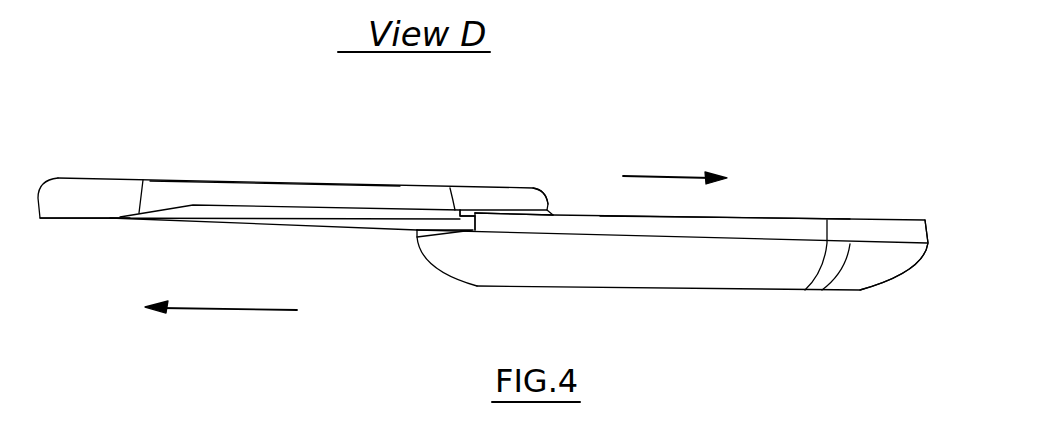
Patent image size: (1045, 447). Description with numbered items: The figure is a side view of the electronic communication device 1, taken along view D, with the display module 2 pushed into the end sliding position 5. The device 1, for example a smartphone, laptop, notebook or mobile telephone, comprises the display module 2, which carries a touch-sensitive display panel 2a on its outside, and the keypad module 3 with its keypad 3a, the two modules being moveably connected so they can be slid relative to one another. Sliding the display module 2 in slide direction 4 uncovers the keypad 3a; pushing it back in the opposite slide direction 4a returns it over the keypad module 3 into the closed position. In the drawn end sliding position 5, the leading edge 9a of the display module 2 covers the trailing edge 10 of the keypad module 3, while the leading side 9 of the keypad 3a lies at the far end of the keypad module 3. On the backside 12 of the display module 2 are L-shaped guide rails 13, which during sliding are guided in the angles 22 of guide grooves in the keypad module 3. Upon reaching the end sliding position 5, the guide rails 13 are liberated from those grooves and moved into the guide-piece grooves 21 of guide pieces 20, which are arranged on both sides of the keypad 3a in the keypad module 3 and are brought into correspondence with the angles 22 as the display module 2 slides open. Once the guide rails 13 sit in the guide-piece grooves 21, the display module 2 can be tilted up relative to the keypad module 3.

The electronic communication device 1 is at (175, 167).
The display module 2 is at (375, 195).
The display panel 2a is at (245, 180).
The keypad module 3 is at (868, 228).
The keypad 3a is at (737, 212).
The slide direction 4 is at (227, 313).
The slide direction 4a is at (663, 177).
The end sliding position 5 is at (550, 208).
The leading side 9 is at (928, 233).
The leading edge 9a is at (540, 188).
The trailing edge 10 is at (417, 252).
The backside 12 is at (128, 219).
The guide rails 13 is at (240, 212).
The guide pieces 20 is at (495, 220).
The guide-piece grooves 21 is at (477, 230).
The angles 22 is at (303, 218).